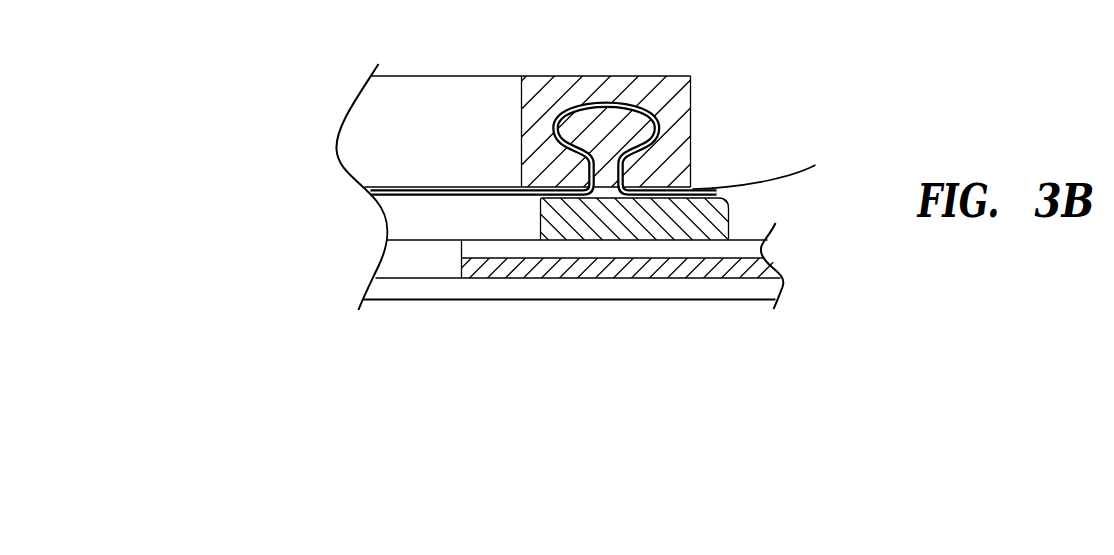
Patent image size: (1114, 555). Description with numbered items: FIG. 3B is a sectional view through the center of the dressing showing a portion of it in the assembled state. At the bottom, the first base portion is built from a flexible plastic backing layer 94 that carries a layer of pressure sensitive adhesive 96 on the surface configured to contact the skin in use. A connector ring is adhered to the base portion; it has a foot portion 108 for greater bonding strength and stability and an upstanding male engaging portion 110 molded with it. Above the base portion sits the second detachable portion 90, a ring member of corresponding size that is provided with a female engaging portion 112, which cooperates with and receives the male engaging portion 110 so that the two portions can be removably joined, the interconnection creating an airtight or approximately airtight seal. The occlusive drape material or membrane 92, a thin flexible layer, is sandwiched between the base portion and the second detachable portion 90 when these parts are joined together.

The second detachable portion 90 is at (703, 88).
The occlusive drape material or membrane 92 is at (793, 166).
The backing layer 94 is at (740, 250).
The pressure sensitive adhesive layer 96 is at (750, 268).
The foot portion 108 is at (733, 217).
The male engaging portion 110 is at (637, 129).
The female engaging portion 112 is at (620, 101).